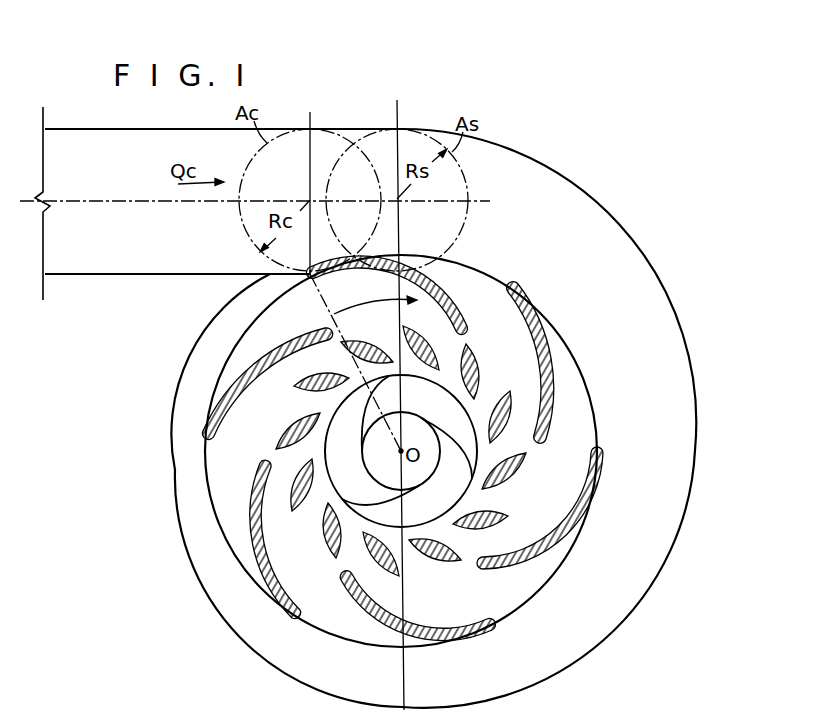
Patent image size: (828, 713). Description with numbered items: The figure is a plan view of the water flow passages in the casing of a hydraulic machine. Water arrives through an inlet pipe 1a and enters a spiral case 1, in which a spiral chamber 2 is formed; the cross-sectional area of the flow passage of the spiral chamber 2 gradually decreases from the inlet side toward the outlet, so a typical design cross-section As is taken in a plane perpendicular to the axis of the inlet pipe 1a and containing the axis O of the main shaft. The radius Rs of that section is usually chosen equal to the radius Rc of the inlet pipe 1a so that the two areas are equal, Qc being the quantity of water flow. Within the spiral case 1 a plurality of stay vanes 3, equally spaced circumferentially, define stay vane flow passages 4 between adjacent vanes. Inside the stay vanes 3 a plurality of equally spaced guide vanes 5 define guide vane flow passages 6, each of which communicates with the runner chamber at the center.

The spiral case 1 is at (607, 216).
The inlet pipe 1a is at (101, 130).
The spiral chamber 2 is at (640, 379).
The stay vanes 3 is at (543, 322).
The stay vane flow passages 4 is at (401, 451).
The guide vanes 5 is at (478, 366).
The guide vane flow passages 6 is at (422, 467).